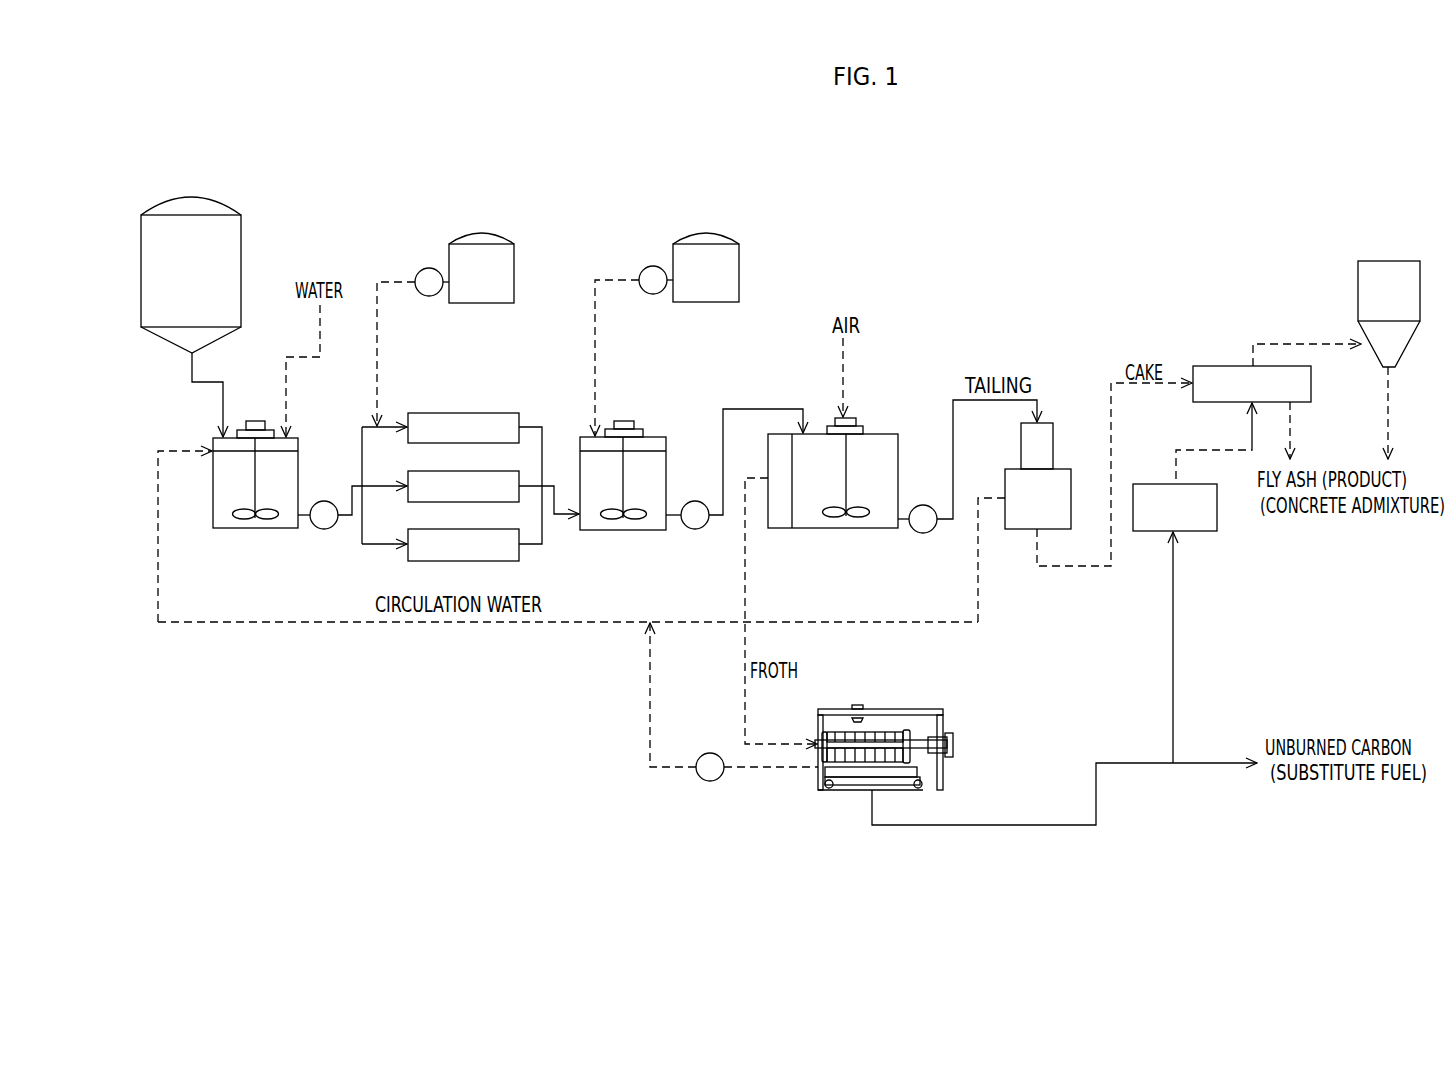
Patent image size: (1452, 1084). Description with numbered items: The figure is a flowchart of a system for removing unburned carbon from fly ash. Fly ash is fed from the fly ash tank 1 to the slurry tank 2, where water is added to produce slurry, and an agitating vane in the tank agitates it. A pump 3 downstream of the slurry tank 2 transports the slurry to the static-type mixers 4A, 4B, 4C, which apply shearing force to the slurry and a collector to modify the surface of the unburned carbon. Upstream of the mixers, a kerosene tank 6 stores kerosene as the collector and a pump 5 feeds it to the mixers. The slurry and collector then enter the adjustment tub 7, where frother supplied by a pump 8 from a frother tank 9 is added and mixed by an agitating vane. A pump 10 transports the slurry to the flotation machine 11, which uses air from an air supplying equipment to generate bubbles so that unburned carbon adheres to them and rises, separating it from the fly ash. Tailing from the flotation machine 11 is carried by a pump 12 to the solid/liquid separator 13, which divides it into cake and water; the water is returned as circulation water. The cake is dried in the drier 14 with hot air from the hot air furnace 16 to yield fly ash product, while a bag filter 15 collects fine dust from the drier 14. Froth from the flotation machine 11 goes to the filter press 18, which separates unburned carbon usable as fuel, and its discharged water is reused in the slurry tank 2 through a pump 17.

The fly ash tank 1 is at (141, 275).
The slurry tank 2 is at (243, 528).
The pump 3 is at (324, 529).
The static-type mixer 4A is at (473, 413).
The static-type mixer 4B is at (468, 471).
The static-type mixer 4C is at (468, 529).
The pump 5 is at (430, 268).
The kerosene tank 6 is at (514, 267).
The adjustment tub 7 is at (653, 437).
The pump 8 is at (653, 266).
The frother tank 9 is at (739, 268).
The pump 10 is at (695, 529).
The flotation machine 11 is at (873, 434).
The pump 12 is at (923, 533).
The solid/liquid separator 13 is at (1053, 444).
The drier 14 is at (1222, 366).
The bag filter 15 is at (1358, 291).
The hot air furnace 16 is at (1217, 505).
The pump 17 is at (710, 781).
The filter press 18 is at (955, 745).